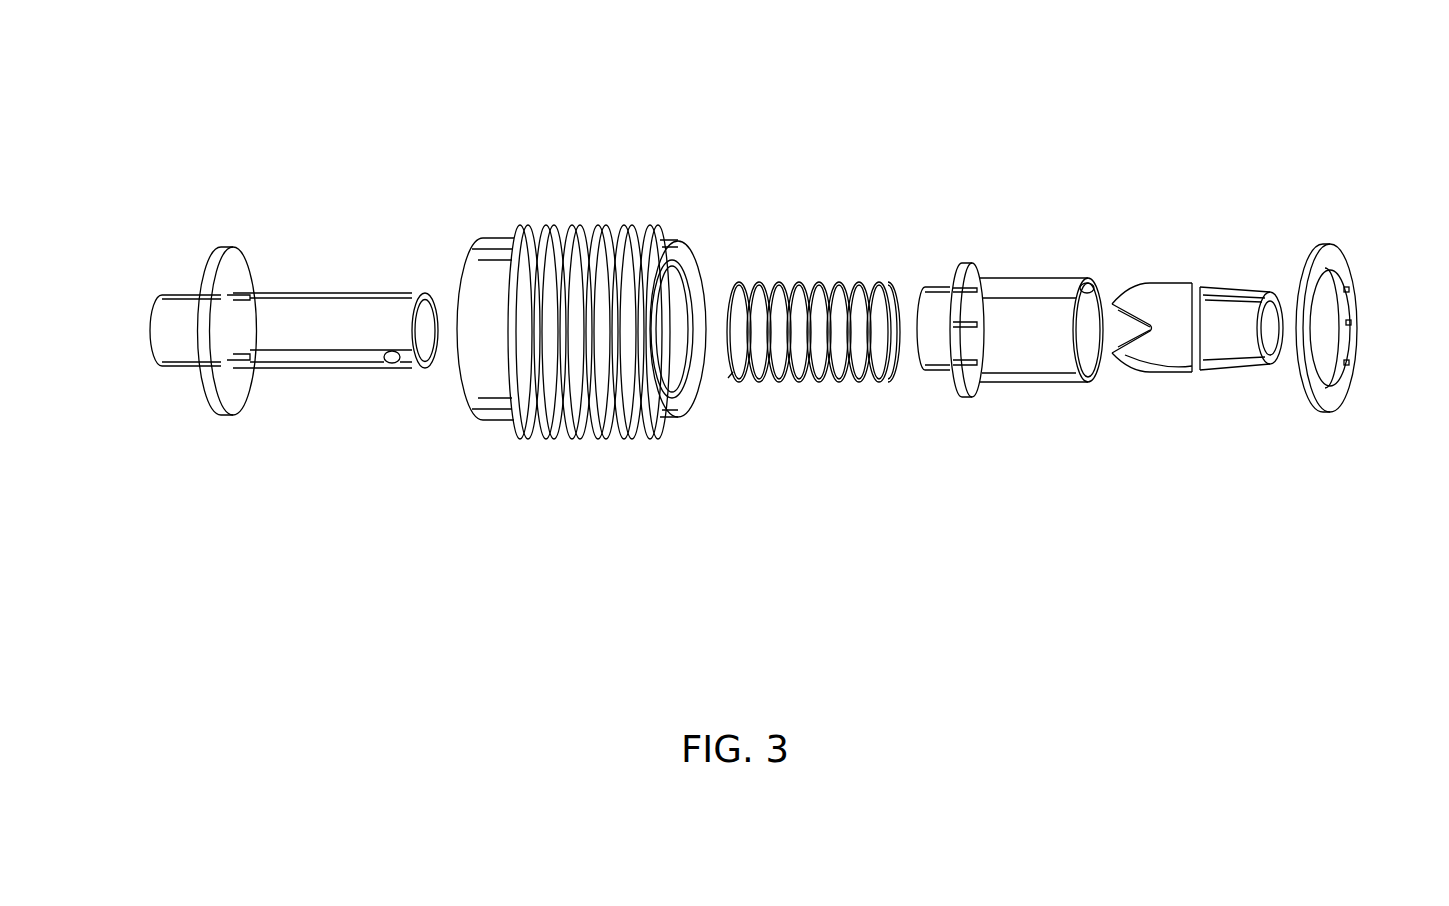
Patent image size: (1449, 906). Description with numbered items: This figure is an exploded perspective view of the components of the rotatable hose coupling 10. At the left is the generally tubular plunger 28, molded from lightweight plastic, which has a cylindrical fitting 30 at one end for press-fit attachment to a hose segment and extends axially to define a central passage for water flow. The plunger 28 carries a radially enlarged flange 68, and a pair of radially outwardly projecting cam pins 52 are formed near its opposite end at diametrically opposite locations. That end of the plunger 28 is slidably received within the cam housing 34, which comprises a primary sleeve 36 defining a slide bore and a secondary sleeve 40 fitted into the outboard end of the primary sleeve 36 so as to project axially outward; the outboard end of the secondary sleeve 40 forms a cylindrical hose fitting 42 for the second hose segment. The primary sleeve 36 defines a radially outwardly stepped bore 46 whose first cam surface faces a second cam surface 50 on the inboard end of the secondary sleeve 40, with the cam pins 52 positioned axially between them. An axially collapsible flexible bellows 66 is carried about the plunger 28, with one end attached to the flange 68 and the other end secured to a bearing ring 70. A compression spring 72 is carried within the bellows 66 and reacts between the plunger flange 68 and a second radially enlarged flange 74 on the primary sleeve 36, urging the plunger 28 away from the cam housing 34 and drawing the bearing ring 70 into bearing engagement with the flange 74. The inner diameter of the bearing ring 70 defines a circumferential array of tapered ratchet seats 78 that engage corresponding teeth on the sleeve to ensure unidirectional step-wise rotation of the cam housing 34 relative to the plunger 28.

The rotatable hose coupling 10 is at (920, 118).
The plunger 28 is at (318, 290).
The cylindrical fitting 30 is at (172, 293).
The cam housing 34 is at (1028, 348).
The primary sleeve 36 is at (1018, 278).
The secondary sleeve 40 is at (1197, 347).
The cylindrical hose fitting 42 is at (1237, 357).
The stepped bore 46 is at (1098, 278).
The second cam surface 50 is at (1160, 378).
The cam pins 52 is at (392, 370).
The bellows 66 is at (615, 225).
The flange 68 is at (232, 406).
The bearing ring 70 is at (1367, 370).
The compression spring 72 is at (826, 386).
The flange 74 is at (965, 262).
The ratchet seats 78 is at (1357, 362).